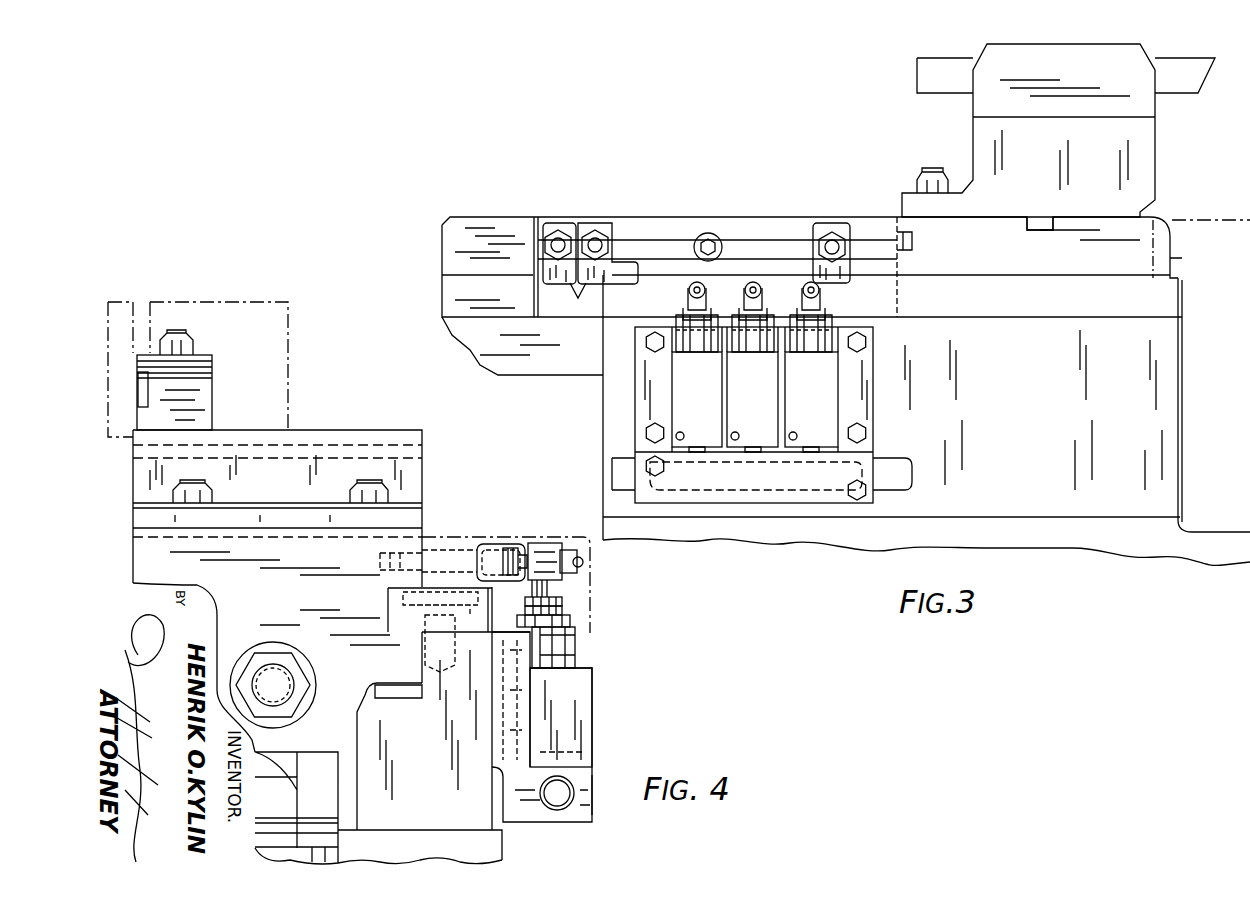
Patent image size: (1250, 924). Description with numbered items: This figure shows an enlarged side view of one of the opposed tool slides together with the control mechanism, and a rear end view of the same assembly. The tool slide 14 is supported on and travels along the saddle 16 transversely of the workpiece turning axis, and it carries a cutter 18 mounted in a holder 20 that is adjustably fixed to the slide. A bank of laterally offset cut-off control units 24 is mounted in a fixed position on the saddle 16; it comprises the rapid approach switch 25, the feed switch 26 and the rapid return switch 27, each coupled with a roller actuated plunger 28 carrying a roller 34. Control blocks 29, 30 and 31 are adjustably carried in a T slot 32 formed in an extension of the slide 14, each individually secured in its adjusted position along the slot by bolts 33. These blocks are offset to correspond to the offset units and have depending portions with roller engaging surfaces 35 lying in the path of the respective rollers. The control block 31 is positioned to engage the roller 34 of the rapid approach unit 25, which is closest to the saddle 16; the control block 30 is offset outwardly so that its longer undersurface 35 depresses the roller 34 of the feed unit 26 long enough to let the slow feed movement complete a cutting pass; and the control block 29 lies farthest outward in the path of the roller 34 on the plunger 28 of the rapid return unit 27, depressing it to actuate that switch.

In FIG. 3, the tool slide 14 is at (747, 217).
In FIG. 4, the tool slide 14 is at (361, 647).
In FIG. 3, the saddle 16 is at (926, 392).
In FIG. 3, the cutter 18 is at (1188, 88).
In FIG. 4, the cutter 18 is at (138, 380).
In FIG. 3, the holder 20 is at (982, 103).
In FIG. 4, the holder 20 is at (212, 398).
In FIG. 3, the bank of cut-off control units 24 is at (885, 398).
In FIG. 4, the bank of cut-off control units 24 is at (600, 681).
In FIG. 3, the rapid approach switch 25 is at (811, 402).
In FIG. 3, the feed switch 26 is at (752, 402).
In FIG. 3, the rapid return switch 27 is at (697, 402).
In FIG. 4, the rapid return switch 27 is at (583, 725).
In FIG. 3, the roller actuated plunger 28 is at (687, 308).
In FIG. 4, the roller actuated plunger 28 is at (565, 608).
In FIG. 3, the control block 29 is at (547, 225).
In FIG. 4, the control block 29 is at (548, 600).
In FIG. 3, the control block 30 is at (610, 225).
In FIG. 4, the control block 30 is at (541, 586).
In FIG. 3, the control block 31 is at (817, 225).
In FIG. 4, the control block 31 is at (533, 583).
In FIG. 3, the T slot 32 is at (683, 242).
In FIG. 4, the T slot 32 is at (502, 557).
In FIG. 3, the bolt 33 is at (587, 232).
In FIG. 4, the bolt 33 is at (567, 552).
In FIG. 3, the roller 34 is at (802, 287).
In FIG. 3, the roller engaging surface 35 is at (860, 290).